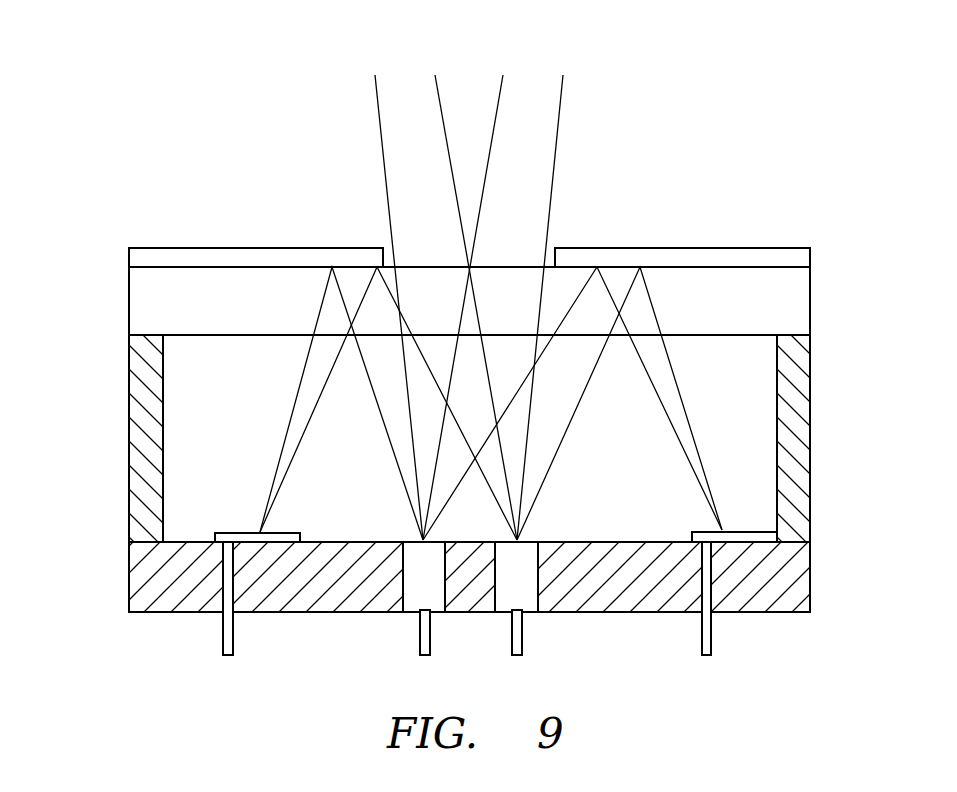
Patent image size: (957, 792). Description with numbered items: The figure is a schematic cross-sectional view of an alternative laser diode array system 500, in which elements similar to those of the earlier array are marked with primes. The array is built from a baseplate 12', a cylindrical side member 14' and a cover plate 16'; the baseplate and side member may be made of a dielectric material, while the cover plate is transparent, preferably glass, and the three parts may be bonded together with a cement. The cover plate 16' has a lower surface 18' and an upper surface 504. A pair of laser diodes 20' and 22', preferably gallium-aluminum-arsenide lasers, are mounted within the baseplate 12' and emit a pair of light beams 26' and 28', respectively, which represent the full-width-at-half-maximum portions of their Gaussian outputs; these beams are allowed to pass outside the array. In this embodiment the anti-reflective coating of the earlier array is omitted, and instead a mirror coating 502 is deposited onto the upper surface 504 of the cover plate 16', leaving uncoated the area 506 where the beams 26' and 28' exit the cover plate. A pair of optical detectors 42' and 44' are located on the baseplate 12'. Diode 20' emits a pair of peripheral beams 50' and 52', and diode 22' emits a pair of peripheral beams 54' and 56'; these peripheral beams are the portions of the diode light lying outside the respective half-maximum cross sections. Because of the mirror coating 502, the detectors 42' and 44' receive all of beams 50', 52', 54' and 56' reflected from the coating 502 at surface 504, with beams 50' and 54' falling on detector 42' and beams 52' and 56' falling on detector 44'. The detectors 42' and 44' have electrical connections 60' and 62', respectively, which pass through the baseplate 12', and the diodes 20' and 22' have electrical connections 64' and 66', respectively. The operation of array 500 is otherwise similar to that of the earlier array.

The baseplate 12' is at (429, 577).
The cylindrical side member 14' is at (429, 438).
The cover plate 16' is at (429, 301).
The lower surface of cover plate 18' is at (470, 355).
The laser diode 20' is at (450, 612).
The laser diode 22' is at (543, 612).
The light beam 26' is at (401, 307).
The light beam 28' is at (539, 307).
The optical detector 42' is at (254, 504).
The optical detector 44' is at (734, 505).
The peripheral beam 50' is at (341, 403).
The peripheral beam 52' is at (572, 403).
The peripheral beam 54' is at (388, 403).
The peripheral beam 56' is at (619, 403).
The electrical connection 60' is at (185, 598).
The electrical connection 62' is at (664, 598).
The electrical connection 64' is at (382, 632).
The electrical connection 66' is at (488, 632).
The laser array system 500 is at (429, 390).
The mirror coating 502 is at (283, 247).
The upper surface of cover plate 504 is at (689, 248).
The exit area 506 is at (510, 267).